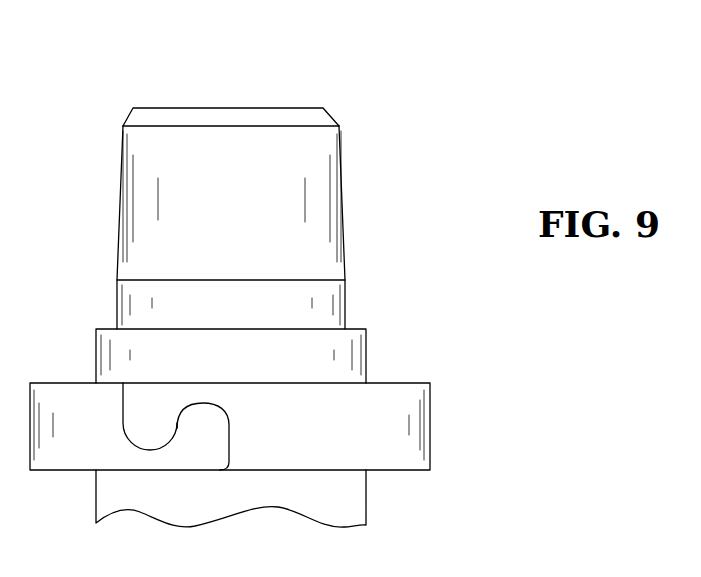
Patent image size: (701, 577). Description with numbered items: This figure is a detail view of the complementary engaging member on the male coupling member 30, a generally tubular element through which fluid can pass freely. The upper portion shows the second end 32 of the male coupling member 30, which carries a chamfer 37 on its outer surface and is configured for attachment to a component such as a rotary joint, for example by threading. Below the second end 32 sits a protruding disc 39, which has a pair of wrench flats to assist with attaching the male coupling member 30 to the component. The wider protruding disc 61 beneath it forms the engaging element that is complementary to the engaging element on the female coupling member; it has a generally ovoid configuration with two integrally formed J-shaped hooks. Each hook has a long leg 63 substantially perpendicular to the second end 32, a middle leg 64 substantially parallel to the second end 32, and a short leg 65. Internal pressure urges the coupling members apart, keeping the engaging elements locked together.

The male coupling member 30 is at (423, 130).
The second end 32 is at (218, 108).
The chamfer 37 is at (141, 120).
The protruding disc 39 is at (348, 370).
The protruding disc 61 is at (392, 424).
The long leg 63 is at (103, 421).
The middle leg 64 is at (150, 456).
The short leg 65 is at (207, 447).